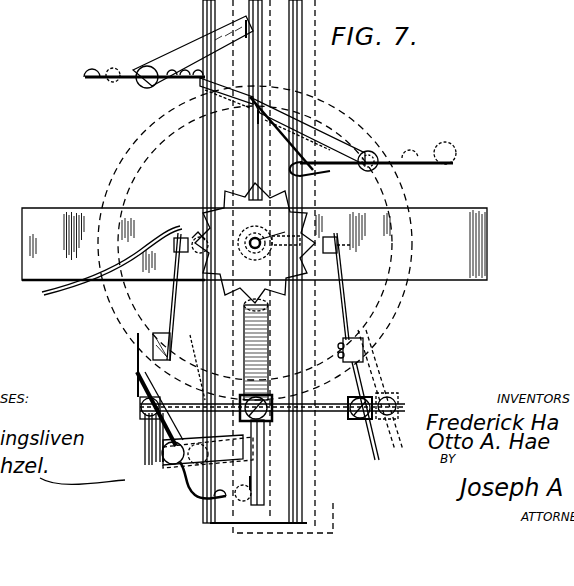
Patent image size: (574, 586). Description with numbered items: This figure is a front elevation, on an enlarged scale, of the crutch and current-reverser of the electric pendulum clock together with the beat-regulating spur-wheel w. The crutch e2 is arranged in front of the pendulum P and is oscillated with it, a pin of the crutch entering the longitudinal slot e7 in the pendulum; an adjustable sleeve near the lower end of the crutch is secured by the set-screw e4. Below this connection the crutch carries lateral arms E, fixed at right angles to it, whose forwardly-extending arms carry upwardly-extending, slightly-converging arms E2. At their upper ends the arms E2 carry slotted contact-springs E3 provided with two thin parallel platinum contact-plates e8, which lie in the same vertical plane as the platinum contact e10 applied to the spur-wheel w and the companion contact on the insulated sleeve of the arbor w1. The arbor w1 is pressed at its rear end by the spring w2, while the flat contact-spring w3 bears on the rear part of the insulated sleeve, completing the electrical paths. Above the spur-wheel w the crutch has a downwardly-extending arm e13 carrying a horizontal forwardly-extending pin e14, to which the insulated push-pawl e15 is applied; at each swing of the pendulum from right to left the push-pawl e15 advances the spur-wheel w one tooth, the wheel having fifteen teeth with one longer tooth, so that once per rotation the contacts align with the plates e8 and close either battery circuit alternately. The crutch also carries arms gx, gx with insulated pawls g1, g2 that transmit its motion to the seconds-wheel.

The pendulum P is at (215, 14).
The spur-wheel w is at (255, 243).
The arbor w1 is at (267, 224).
The spring w2 is at (218, 218).
The flat contact-spring w3 is at (56, 282).
The arm gx is at (193, 242).
The insulated pawl g1 is at (128, 80).
The insulated pawl g2 is at (198, 489).
The crutch e2 is at (245, 23).
The set-screw e4 is at (289, 254).
The longitudinal slot e7 is at (253, 342).
The platinum contact-plates e8 is at (176, 244).
The platinum contact e10 is at (209, 254).
The downwardly-extending arm e13 is at (273, 143).
The horizontal forwardly-extending pin e14 is at (368, 171).
The insulated push-pawl e15 is at (466, 164).
The lateral arms E is at (302, 422).
The upwardly-extending arms E2 is at (150, 370).
The slotted contact-springs E3 is at (175, 311).